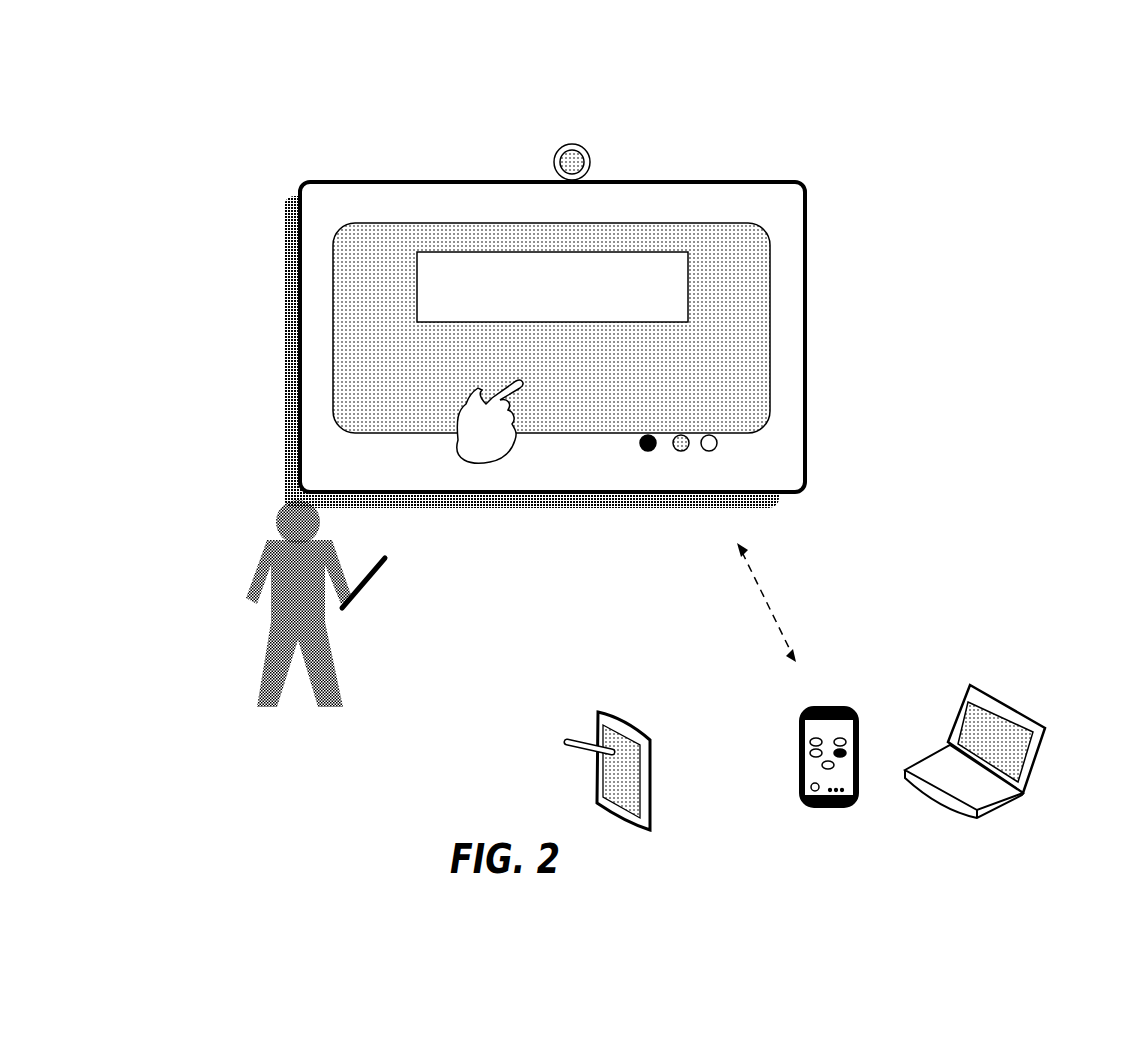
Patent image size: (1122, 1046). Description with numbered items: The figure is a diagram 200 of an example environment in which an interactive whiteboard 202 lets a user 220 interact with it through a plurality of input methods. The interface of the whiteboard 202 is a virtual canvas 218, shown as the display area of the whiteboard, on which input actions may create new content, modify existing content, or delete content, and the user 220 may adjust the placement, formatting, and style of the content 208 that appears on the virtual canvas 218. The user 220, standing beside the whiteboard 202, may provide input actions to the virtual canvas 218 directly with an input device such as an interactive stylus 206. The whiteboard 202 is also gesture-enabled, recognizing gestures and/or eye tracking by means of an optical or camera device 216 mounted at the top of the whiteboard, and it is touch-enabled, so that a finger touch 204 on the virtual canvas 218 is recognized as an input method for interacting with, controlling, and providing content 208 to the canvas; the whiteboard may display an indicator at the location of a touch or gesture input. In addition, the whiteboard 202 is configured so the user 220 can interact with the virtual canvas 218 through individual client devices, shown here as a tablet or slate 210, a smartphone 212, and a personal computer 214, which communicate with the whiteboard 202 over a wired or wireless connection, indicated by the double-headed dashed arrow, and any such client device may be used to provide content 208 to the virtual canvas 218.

The diagram 200 is at (1003, 125).
The interactive whiteboard 202 is at (648, 183).
The finger touch 204 is at (495, 368).
The interactive stylus 206 is at (383, 553).
The content 208 is at (663, 293).
The tablet or slate 210 is at (641, 727).
The smartphone 212 is at (836, 820).
The personal computer 214 is at (990, 683).
The optical or camera device 216 is at (573, 143).
The virtual canvas 218 is at (675, 222).
The user 220 is at (248, 710).